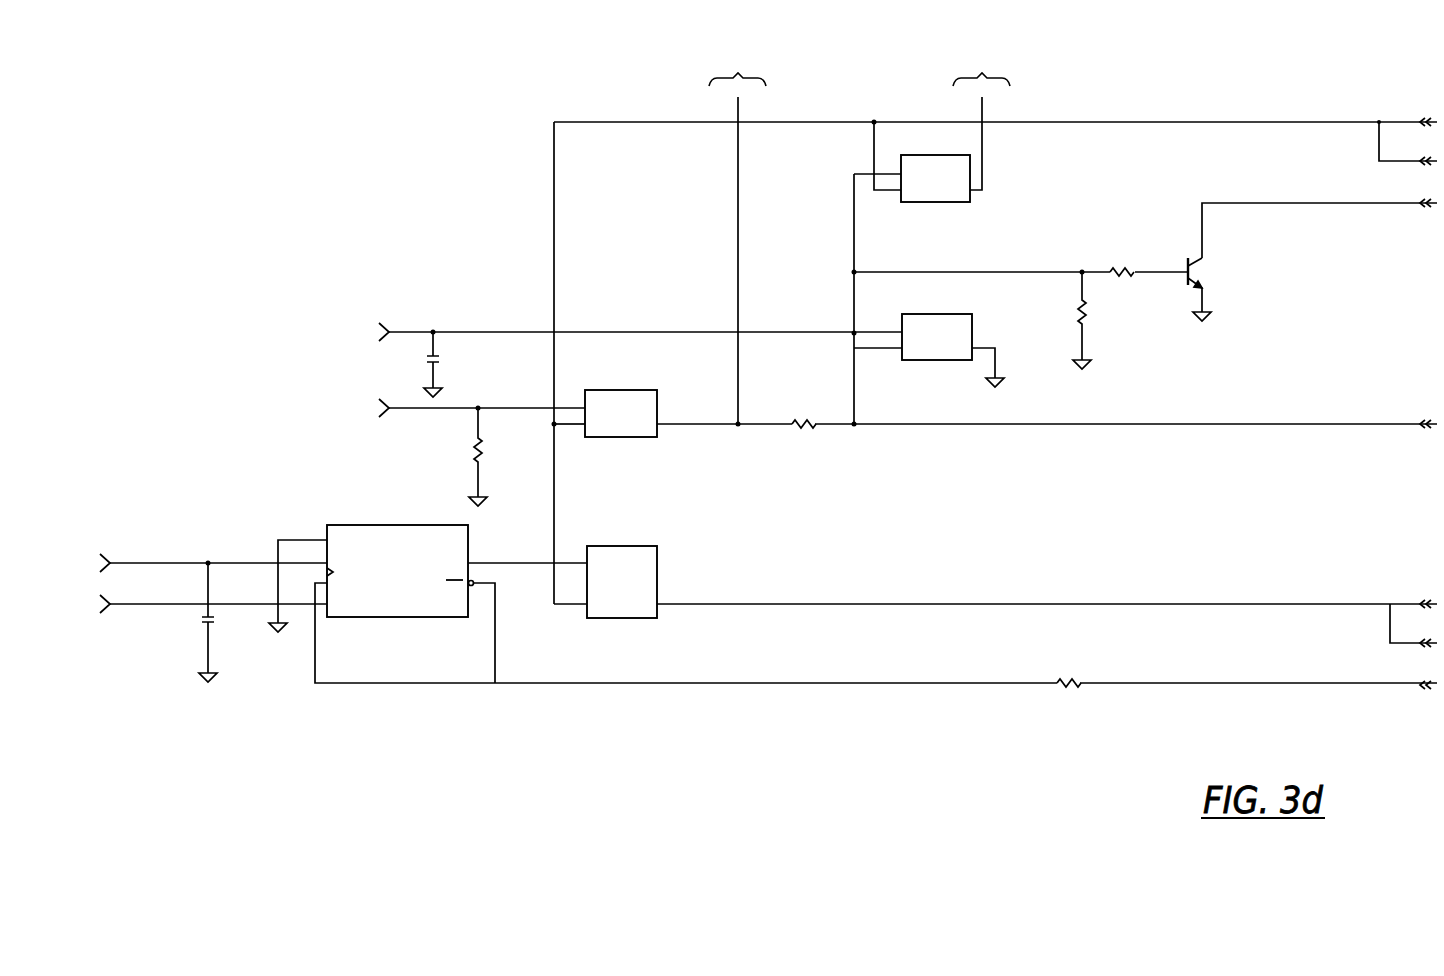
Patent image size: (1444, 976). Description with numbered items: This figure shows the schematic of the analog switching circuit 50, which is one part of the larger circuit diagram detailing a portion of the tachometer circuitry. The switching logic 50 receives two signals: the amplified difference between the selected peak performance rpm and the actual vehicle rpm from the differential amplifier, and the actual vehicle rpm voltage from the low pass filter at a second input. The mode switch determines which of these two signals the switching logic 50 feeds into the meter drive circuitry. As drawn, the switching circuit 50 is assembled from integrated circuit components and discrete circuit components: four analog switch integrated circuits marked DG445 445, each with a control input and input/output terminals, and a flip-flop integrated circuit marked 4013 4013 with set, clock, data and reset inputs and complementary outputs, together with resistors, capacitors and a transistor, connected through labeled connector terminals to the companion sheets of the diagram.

The switching logic 50 is at (491, 139).
The DG445 analog switch 445 is at (778, 400).
The 4013 dual D flip-flop 4013 is at (397, 584).